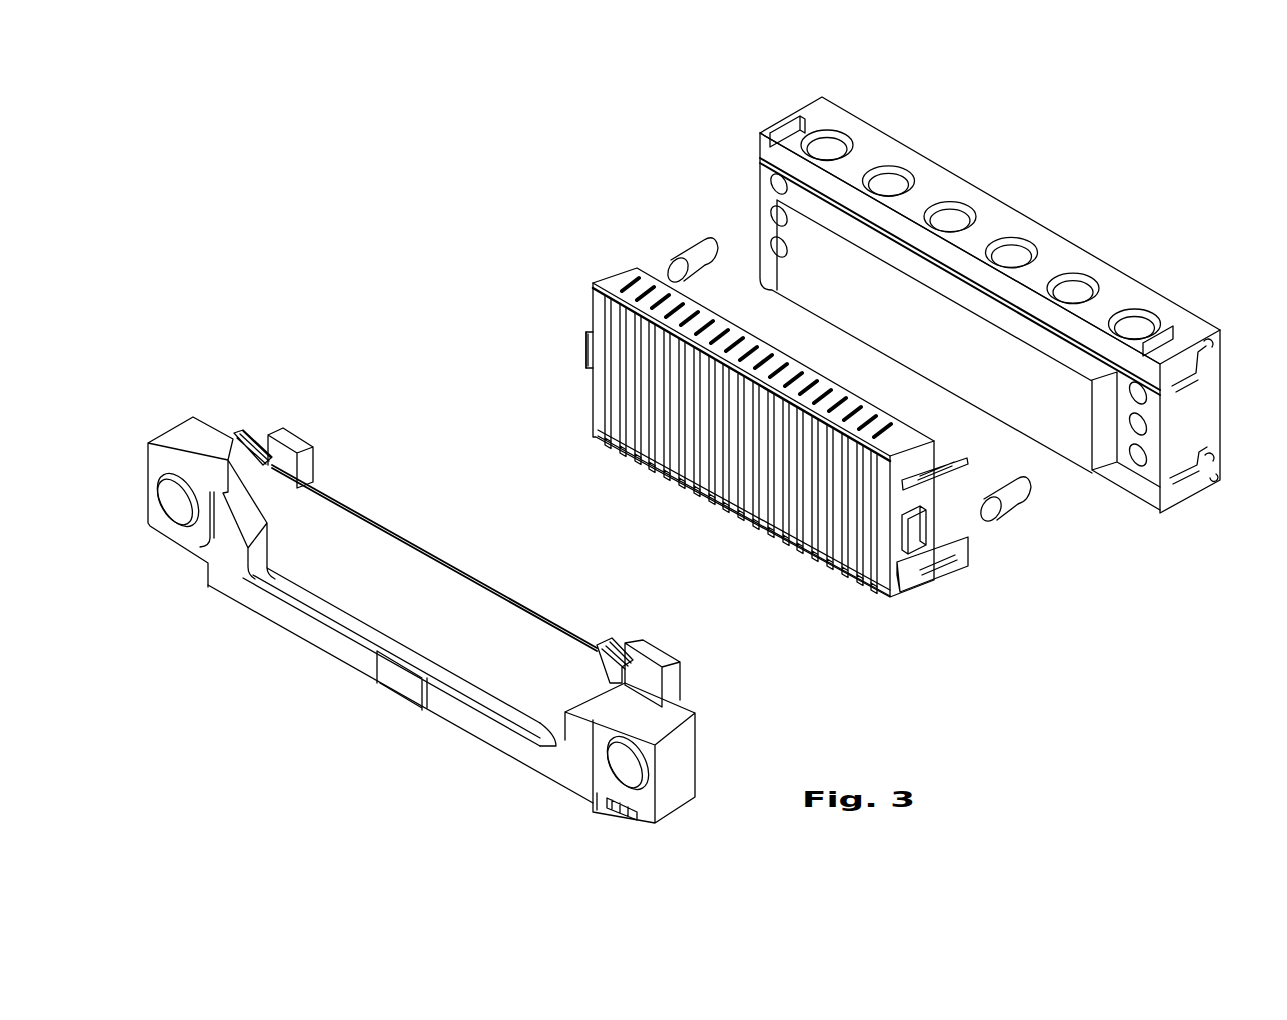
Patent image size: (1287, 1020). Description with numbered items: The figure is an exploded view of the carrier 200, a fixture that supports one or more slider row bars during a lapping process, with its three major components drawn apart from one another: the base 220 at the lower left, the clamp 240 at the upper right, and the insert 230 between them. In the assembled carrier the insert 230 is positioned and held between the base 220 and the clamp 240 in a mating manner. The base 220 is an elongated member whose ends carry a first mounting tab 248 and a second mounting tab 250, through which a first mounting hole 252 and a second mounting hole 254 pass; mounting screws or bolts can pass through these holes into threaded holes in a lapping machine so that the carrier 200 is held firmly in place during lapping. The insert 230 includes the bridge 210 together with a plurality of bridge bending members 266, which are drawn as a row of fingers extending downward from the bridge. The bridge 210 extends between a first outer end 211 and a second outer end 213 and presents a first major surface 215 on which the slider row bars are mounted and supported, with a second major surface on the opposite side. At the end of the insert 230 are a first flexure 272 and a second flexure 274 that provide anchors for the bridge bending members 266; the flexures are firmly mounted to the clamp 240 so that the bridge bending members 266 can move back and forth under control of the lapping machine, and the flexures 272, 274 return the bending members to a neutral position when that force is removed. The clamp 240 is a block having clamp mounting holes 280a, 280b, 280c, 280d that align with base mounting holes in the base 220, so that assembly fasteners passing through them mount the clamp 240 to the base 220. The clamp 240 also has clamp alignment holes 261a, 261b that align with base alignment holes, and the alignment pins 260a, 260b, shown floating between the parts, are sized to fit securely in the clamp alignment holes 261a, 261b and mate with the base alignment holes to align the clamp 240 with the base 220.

The carrier 200 is at (651, 116).
The bridge 210 is at (811, 447).
The first outer end 211 is at (597, 281).
The second outer end 213 is at (926, 452).
The first major surface 215 is at (828, 394).
The base 220 is at (465, 566).
The insert 230 is at (811, 451).
The clamp 240 is at (981, 343).
The first mounting tab 248 is at (188, 420).
The second mounting tab 250 is at (702, 774).
The first mounting hole 252 is at (182, 500).
The second mounting hole 254 is at (630, 772).
The alignment pin 260a is at (676, 262).
The alignment pin 260b is at (1013, 504).
The clamp alignment hole 261a is at (775, 214).
The clamp alignment hole 261b is at (1147, 430).
The bridge bending members 266 is at (633, 458).
The first flexure 272 is at (968, 460).
The second flexure 274 is at (968, 568).
The clamp mounting hole 280a is at (775, 182).
The clamp mounting hole 280b is at (775, 246).
The clamp mounting hole 280c is at (1147, 397).
The clamp mounting hole 280d is at (1140, 458).